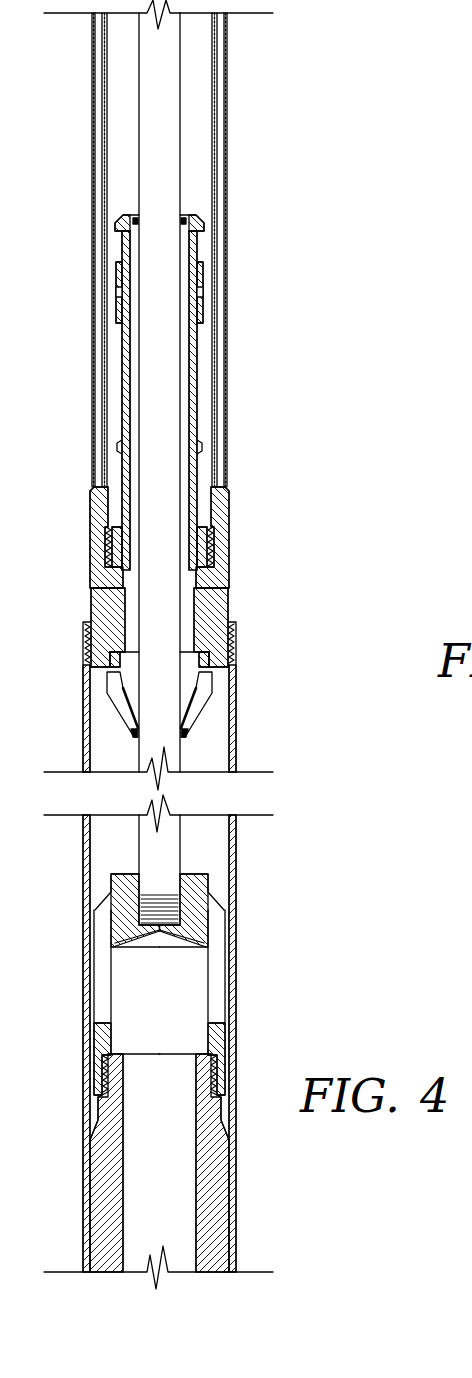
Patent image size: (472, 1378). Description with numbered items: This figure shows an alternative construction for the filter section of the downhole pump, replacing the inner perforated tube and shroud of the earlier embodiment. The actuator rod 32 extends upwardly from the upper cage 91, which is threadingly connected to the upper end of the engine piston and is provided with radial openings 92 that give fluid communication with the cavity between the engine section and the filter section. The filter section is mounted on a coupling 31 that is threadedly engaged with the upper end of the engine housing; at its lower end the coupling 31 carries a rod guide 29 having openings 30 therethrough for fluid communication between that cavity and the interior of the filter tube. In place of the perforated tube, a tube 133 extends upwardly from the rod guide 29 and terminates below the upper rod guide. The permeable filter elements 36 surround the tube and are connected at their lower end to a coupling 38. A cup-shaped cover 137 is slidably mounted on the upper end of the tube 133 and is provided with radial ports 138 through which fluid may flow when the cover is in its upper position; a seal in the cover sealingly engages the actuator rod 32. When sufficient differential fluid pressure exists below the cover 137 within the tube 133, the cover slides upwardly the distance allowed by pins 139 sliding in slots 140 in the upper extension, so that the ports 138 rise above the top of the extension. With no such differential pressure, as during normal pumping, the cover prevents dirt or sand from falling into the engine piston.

The permeable filter elements 36 is at (218, 90).
The radial ports 138 is at (200, 238).
The slots 140 is at (188, 266).
The pins 139 is at (200, 290).
The cup-shaped cover 137 is at (200, 315).
The tube 133 is at (197, 413).
The coupling 38 is at (225, 514).
The coupling 31 is at (225, 603).
The openings 30 is at (205, 688).
The rod guide 29 is at (185, 723).
The actuator rod 32 is at (165, 852).
The upper cage 91 is at (197, 918).
The radial openings 92 is at (220, 980).